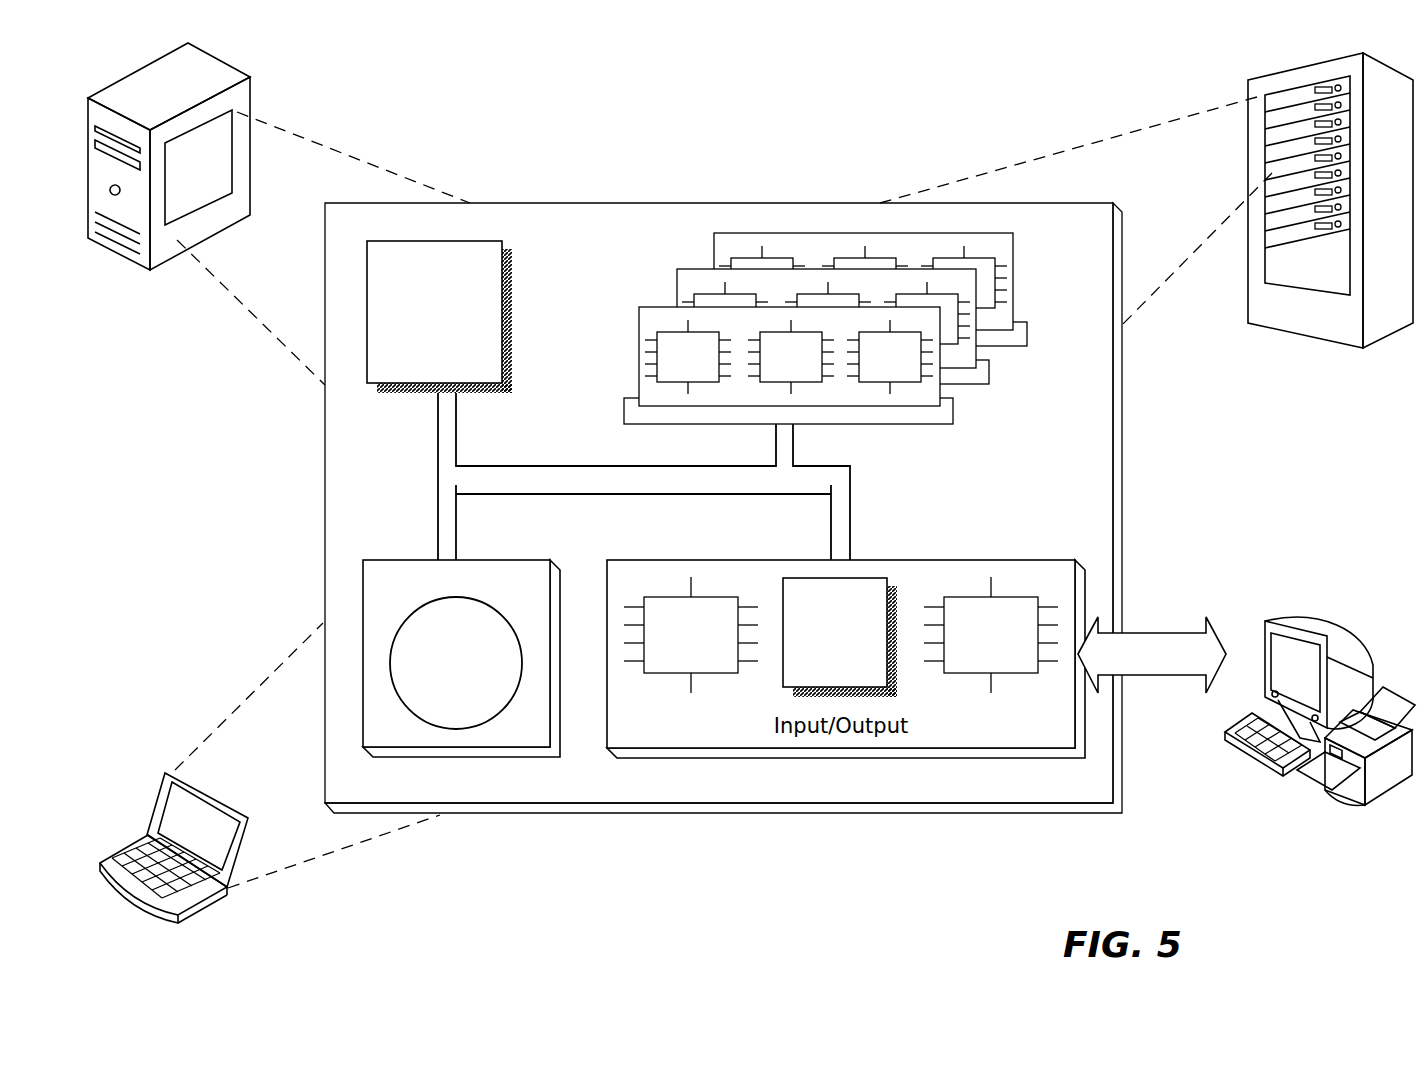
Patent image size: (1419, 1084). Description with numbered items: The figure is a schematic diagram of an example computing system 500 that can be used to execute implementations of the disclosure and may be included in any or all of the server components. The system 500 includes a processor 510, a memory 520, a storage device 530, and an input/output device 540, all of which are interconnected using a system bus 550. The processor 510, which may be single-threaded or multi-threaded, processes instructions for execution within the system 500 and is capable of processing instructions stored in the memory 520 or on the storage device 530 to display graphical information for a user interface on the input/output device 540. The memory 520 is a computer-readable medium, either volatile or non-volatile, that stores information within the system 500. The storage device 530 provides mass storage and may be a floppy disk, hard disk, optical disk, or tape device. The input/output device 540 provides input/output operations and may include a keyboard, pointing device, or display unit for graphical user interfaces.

The computing system 500 is at (534, 112).
The processor 510 is at (497, 380).
The memory 520 is at (1026, 388).
The storage device 530 is at (542, 739).
The input/output device 540 is at (1263, 628).
The system bus 550 is at (638, 485).